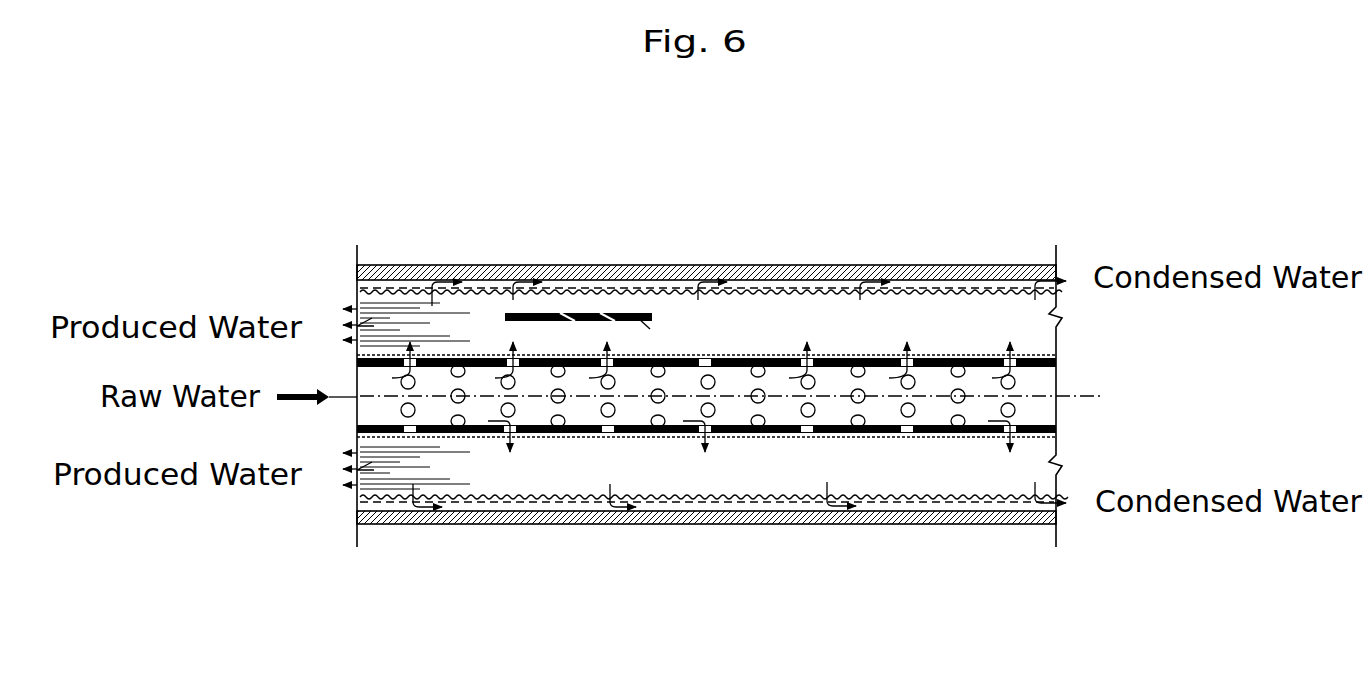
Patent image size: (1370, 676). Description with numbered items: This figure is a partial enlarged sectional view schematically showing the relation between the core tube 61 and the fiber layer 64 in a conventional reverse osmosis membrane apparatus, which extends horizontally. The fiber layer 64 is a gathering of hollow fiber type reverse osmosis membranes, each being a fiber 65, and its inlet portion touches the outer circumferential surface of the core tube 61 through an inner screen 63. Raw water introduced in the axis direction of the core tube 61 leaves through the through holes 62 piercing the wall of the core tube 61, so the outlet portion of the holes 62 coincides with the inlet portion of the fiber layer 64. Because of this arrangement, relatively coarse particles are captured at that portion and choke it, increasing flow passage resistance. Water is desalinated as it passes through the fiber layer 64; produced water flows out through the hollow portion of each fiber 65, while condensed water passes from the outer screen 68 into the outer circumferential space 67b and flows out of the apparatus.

The core tube 61 is at (1048, 364).
The through holes 62 is at (1024, 407).
The inner screen 63 is at (1030, 350).
The fiber layer 64 is at (750, 320).
The fiber 65 is at (584, 305).
The outer circumferential space 67b is at (502, 288).
The outer screen 68 is at (908, 285).